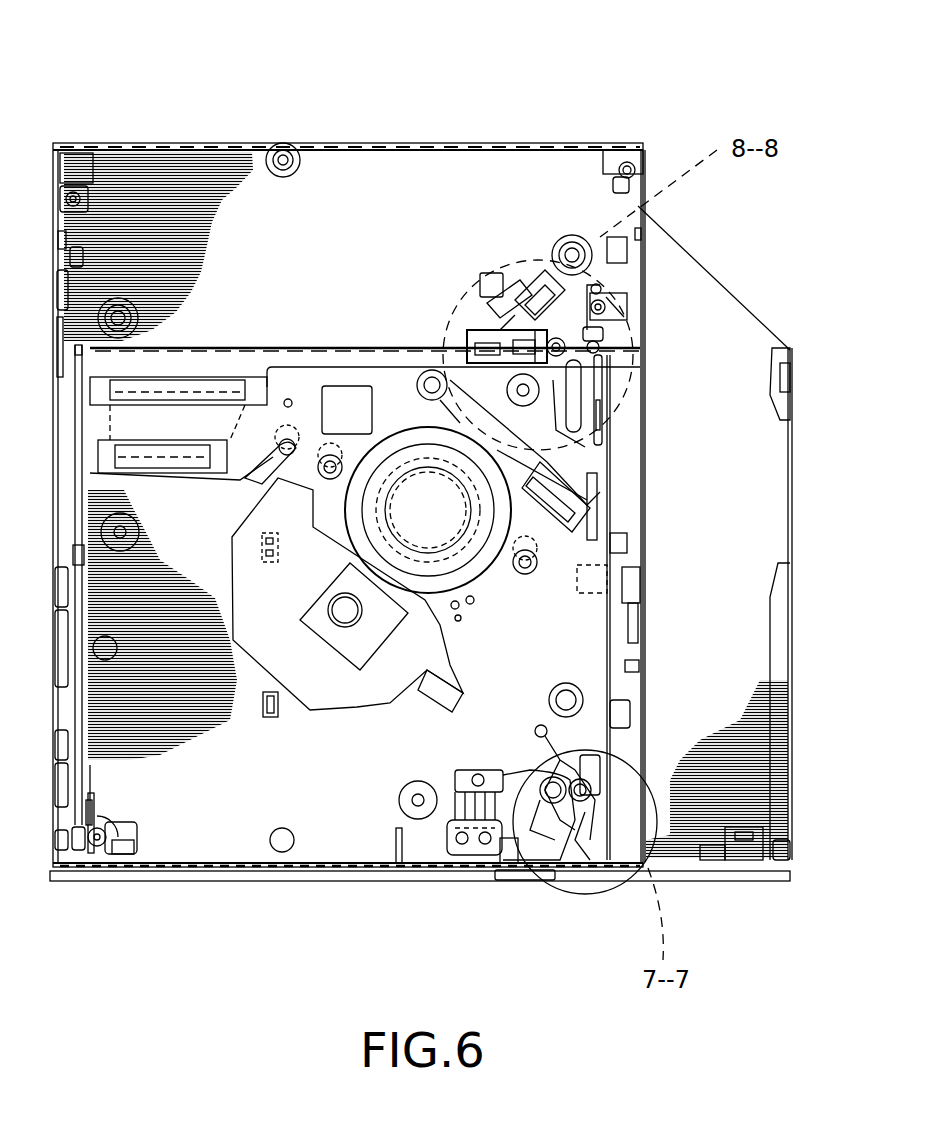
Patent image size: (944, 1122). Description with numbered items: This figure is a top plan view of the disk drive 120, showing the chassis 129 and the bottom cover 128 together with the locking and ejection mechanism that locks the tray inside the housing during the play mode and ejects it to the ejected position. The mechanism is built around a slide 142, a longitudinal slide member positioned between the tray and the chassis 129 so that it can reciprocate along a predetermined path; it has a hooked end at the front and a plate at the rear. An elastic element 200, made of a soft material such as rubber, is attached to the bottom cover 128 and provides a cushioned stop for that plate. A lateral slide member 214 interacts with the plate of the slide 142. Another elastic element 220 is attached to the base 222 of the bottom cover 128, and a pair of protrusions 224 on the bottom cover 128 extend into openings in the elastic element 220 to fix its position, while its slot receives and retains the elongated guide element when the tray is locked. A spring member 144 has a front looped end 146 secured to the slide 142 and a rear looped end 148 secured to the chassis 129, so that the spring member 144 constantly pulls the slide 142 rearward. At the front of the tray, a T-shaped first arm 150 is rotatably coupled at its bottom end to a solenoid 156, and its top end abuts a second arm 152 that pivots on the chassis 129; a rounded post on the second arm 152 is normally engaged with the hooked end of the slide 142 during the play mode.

The disk drive 120 is at (90, 50).
The bottom cover 128 is at (176, 195).
The chassis 129 is at (168, 765).
The base 222 is at (263, 257).
The lateral slide member 214 is at (440, 343).
The elastic element 220 is at (503, 310).
The protrusions 224 is at (507, 300).
The elastic element 200 is at (593, 292).
The slide 142 is at (598, 312).
The rear looped end 148 is at (598, 345).
The spring member 144 is at (598, 393).
The front looped end 146 is at (598, 455).
The first arm 150 is at (530, 773).
The second arm 152 is at (565, 800).
The solenoid 156 is at (473, 837).